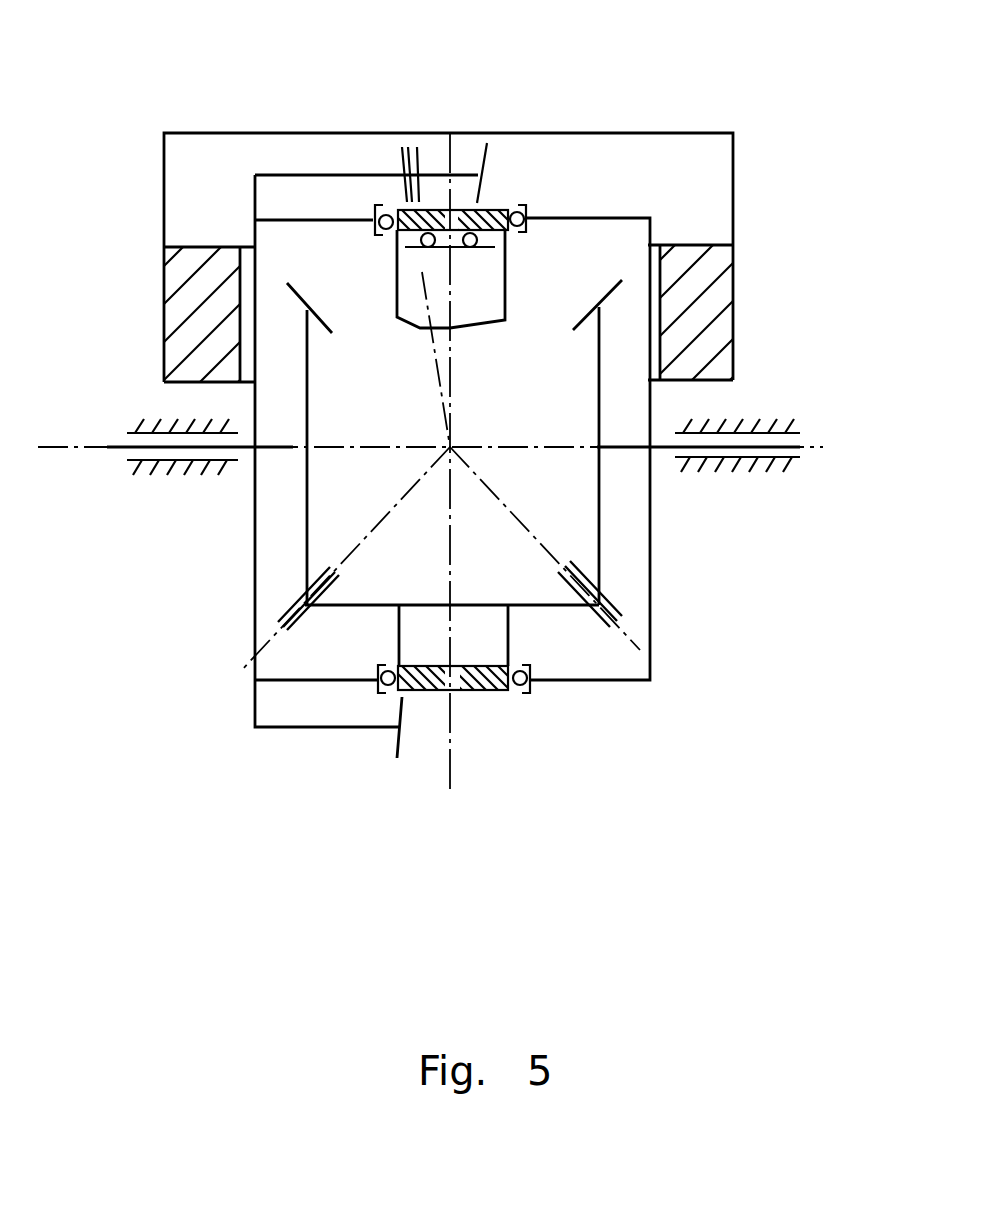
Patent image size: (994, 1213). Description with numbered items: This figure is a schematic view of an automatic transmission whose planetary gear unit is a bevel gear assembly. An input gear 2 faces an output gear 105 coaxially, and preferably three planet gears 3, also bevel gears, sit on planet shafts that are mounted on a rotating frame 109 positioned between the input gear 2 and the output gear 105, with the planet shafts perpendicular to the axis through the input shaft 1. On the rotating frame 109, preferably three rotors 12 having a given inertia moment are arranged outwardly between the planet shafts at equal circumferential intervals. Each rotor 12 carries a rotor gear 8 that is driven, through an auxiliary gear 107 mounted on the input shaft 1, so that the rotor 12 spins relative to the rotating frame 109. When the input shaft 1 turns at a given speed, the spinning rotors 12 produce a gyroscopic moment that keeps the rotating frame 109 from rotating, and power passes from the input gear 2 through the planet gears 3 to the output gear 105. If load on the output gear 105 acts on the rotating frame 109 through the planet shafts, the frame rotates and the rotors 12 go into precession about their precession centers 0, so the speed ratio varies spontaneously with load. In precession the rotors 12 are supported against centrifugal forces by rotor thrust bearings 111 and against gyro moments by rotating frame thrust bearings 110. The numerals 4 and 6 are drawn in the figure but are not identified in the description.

The precession center 0 is at (357, 550).
The input shaft 1 is at (118, 452).
The input gear 2 is at (305, 500).
The planet gear 3 is at (360, 605).
The lower bearing 4 is at (453, 637).
The foundation 6 is at (767, 452).
The rotor gear 8 is at (480, 160).
The rotor 12 is at (707, 343).
The output gear 105 is at (600, 548).
The auxiliary gear 107 is at (400, 160).
The rotating frame 109 is at (502, 210).
The rotating frame thrust bearing 110 is at (523, 210).
The rotor thrust bearing 111 is at (470, 246).